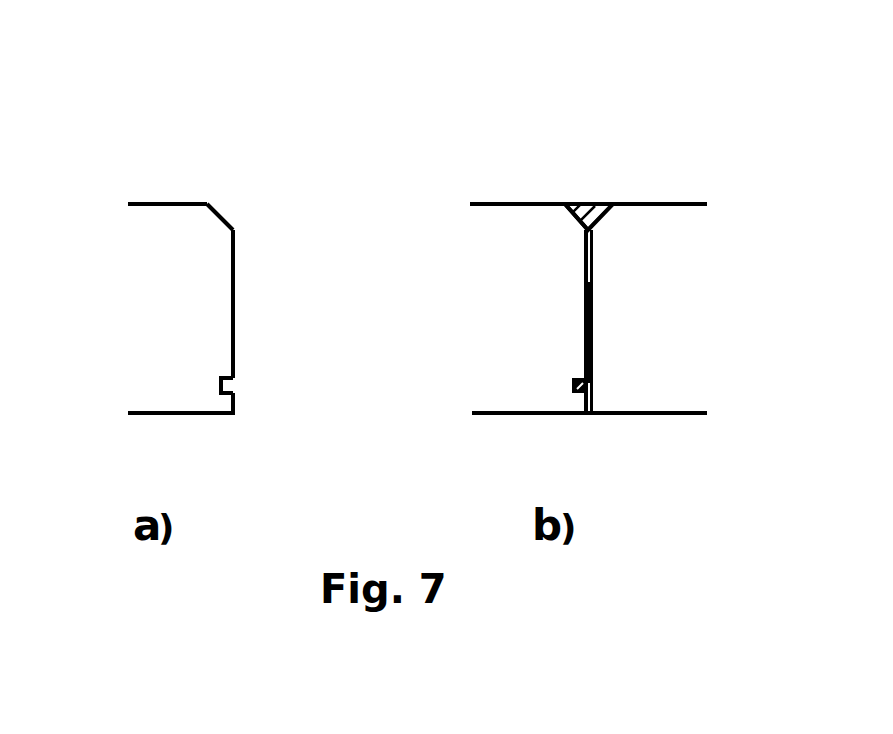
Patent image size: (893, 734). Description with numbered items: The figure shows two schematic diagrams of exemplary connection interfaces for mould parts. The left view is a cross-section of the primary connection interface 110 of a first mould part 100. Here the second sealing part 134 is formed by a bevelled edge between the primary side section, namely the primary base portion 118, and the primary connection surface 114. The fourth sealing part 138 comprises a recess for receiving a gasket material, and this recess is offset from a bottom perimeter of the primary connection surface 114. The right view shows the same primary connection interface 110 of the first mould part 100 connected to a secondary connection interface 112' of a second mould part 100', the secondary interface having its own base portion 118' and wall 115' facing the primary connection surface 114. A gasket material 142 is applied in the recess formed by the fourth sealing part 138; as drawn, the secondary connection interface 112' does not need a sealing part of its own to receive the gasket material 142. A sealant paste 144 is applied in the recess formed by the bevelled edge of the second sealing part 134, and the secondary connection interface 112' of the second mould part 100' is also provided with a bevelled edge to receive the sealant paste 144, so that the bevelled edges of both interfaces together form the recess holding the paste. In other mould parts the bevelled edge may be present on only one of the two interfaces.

The first mould part 100 is at (388, 94).
The second mould part 100' is at (719, 84).
The primary connection interface 110 is at (205, 398).
The secondary connection interface 112' is at (647, 440).
The primary connection surface 114 is at (233, 263).
The wall of second profile 115' is at (637, 321).
The primary base portion 118 is at (318, 155).
The top flange of second profile 118' is at (685, 162).
The second sealing part 134 is at (219, 212).
The fourth sealing part 138 is at (228, 387).
The gasket material 142 is at (572, 378).
The sealant paste 144 is at (590, 204).